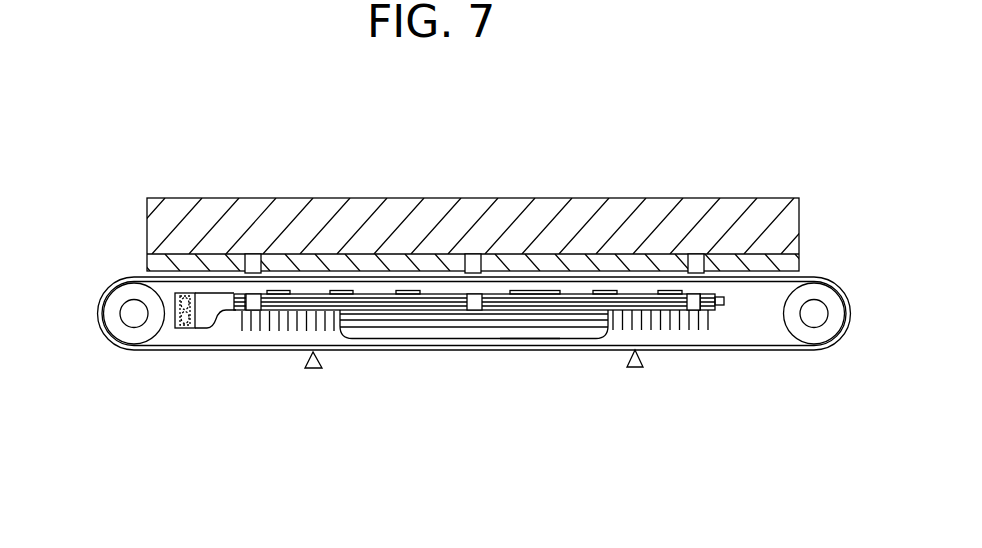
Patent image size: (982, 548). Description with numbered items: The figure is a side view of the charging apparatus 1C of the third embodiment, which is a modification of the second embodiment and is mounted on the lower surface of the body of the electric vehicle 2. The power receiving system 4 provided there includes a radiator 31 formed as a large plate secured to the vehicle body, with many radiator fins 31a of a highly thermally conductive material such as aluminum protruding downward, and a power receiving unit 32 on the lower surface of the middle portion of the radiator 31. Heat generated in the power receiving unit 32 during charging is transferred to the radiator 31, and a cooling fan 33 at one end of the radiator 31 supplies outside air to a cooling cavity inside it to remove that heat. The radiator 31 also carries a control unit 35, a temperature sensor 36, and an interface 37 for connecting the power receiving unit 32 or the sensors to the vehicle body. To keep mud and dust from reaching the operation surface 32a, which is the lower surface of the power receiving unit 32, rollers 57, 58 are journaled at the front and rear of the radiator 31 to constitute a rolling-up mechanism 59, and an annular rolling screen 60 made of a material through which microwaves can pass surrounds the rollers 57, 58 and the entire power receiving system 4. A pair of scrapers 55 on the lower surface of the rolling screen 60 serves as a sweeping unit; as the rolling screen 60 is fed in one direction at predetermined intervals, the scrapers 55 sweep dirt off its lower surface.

The charging apparatus 1C is at (135, 236).
The electric vehicle 2 is at (147, 199).
The power receiving system 4 is at (747, 296).
The radiator 31 is at (640, 297).
The radiator fins 31a is at (710, 312).
The power receiving unit 32 is at (428, 340).
The operation surface 32a is at (528, 340).
The cooling fan 33 is at (185, 329).
The control unit 35 is at (535, 290).
The temperature sensor 36 is at (416, 292).
The interface 37 is at (253, 258).
The scrapers 55 is at (313, 369).
The roller 57 is at (120, 330).
The roller 58 is at (813, 332).
The rolling-up mechanism 59 is at (838, 346).
The rolling screen 60 is at (243, 352).